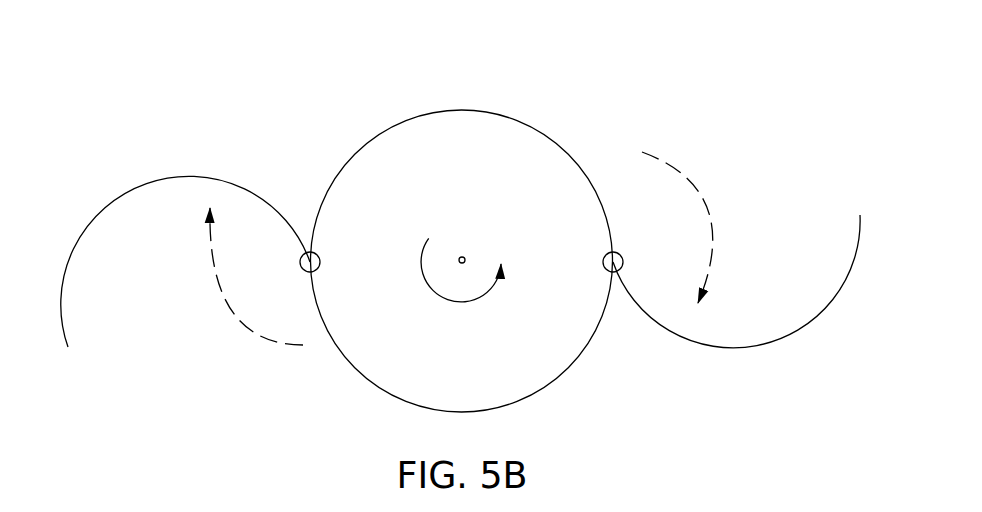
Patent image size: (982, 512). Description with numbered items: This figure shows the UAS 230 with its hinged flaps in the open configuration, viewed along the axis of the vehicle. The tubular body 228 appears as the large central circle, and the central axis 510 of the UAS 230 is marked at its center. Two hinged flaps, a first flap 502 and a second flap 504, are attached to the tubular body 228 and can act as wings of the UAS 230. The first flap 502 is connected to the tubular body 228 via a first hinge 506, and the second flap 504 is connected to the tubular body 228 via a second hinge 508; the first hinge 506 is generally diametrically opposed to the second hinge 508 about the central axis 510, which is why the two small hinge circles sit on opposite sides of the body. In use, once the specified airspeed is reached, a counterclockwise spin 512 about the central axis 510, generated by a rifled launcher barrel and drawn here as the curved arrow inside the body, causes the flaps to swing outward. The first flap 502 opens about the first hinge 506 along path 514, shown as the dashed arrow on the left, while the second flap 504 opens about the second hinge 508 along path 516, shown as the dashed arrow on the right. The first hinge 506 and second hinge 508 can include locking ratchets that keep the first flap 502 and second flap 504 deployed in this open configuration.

The tubular body 228 is at (462, 110).
The UAS 230 is at (298, 62).
The first flap 502 is at (192, 178).
The second flap 504 is at (707, 343).
The first hinge 506 is at (320, 261).
The second hinge 508 is at (603, 261).
The central axis 510 is at (462, 257).
The counterclockwise spin 512 is at (448, 299).
The path 514 is at (225, 302).
The path 516 is at (710, 212).